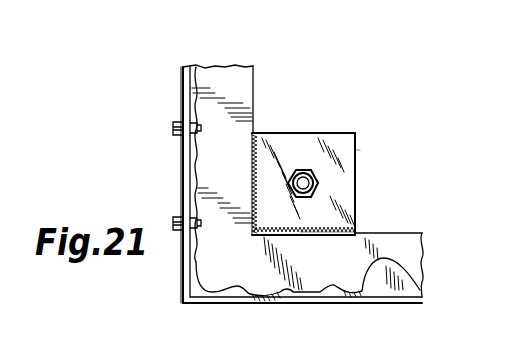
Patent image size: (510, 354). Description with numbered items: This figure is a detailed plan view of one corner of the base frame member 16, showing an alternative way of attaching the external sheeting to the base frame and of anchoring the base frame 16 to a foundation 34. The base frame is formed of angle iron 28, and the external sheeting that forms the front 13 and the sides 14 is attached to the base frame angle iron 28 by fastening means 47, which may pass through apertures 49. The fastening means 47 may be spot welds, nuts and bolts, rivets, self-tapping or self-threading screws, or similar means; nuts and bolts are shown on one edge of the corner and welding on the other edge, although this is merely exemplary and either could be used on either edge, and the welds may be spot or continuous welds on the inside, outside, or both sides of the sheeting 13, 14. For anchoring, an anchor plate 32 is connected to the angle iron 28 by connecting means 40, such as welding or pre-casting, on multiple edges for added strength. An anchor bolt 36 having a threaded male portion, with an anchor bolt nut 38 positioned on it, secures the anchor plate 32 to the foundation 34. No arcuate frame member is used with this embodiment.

The front sheeting 13 is at (200, 197).
The side sheeting 14 is at (333, 287).
The base frame member 16 is at (208, 78).
The angle iron 28 is at (183, 97).
The anchor plate 32 is at (335, 140).
The foundation 34 is at (370, 155).
The anchor bolt 36 is at (318, 188).
The anchor bolt nut 38 is at (290, 170).
The connecting means 40 is at (327, 233).
The fastening means 47 is at (172, 127).
The aperture 49 is at (183, 147).